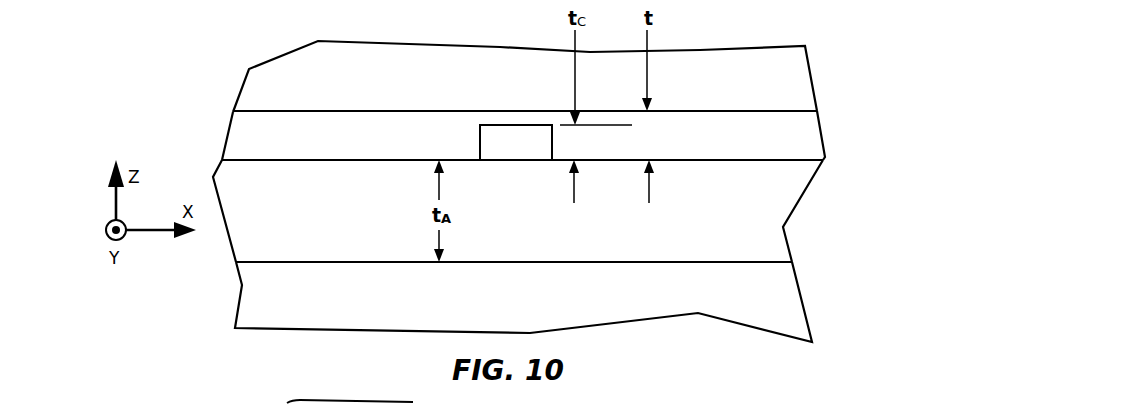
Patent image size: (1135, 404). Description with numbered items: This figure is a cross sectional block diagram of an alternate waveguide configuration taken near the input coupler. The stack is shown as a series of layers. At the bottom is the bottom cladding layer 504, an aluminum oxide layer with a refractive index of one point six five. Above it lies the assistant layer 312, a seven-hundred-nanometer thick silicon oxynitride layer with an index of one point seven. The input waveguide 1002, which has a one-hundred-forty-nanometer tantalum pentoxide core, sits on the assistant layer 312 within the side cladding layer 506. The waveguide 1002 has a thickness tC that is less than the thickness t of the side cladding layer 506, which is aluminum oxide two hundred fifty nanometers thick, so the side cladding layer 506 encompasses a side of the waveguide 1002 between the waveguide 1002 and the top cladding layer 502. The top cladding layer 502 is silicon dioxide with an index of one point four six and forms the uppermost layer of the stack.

The top cladding layer 502 is at (802, 73).
The side cladding layer 506 is at (807, 141).
The assistant layer 312 is at (800, 199).
The bottom cladding layer 504 is at (798, 309).
The input waveguide 1002 is at (496, 154).